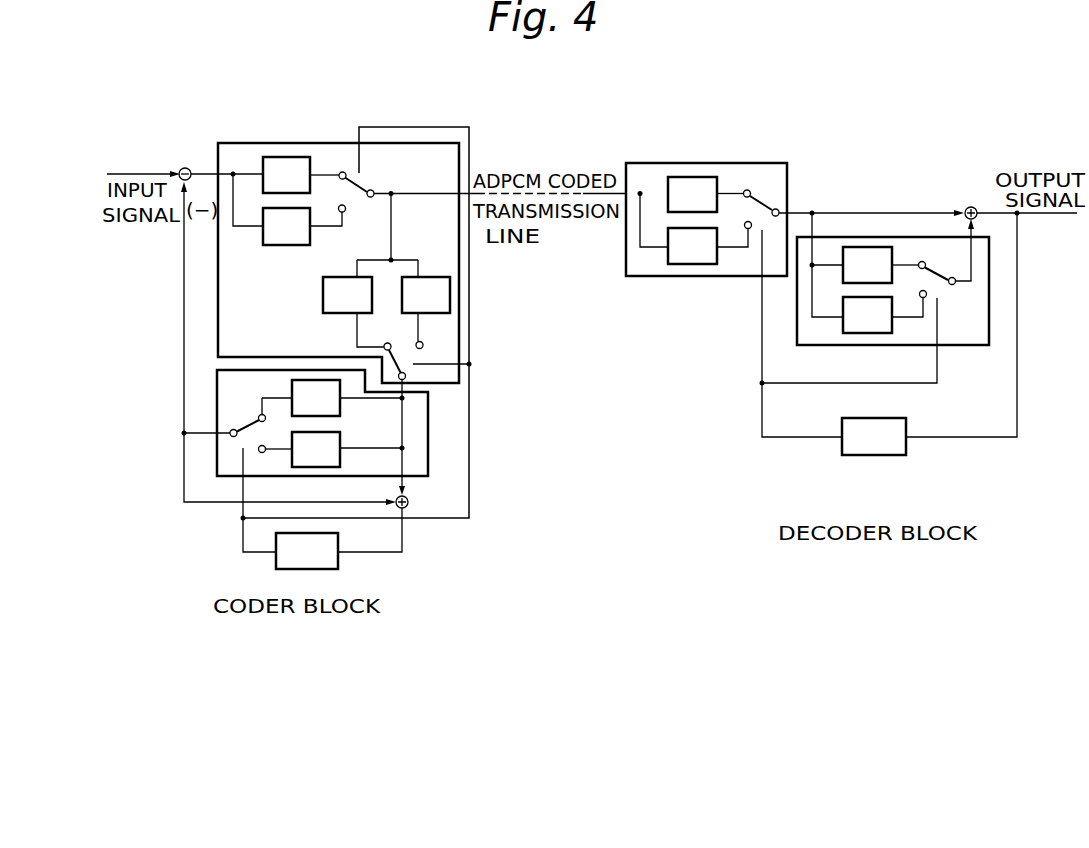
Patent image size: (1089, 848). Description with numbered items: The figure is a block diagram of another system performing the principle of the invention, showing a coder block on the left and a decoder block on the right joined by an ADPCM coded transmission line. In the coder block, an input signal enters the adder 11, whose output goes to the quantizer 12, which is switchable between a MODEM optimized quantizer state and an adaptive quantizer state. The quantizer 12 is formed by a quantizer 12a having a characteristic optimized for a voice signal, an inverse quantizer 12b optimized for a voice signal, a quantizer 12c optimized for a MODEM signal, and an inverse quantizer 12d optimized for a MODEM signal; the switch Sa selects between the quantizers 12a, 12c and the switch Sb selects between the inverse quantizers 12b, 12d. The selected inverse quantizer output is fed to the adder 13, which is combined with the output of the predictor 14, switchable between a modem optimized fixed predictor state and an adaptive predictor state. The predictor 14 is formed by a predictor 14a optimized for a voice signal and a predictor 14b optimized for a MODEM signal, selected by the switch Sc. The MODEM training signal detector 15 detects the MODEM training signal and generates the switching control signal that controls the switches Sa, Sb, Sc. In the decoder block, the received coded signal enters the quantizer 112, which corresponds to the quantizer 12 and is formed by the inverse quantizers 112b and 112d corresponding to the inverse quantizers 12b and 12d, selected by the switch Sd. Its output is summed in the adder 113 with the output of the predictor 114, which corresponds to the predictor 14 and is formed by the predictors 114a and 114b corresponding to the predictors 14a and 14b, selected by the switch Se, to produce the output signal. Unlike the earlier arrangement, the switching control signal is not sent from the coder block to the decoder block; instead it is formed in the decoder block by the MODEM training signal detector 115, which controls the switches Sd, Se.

The adder 11 is at (184, 168).
The quantizer 12 is at (279, 142).
The quantizer 12a is at (310, 160).
The inverse quantizer 12b is at (323, 300).
The quantizer 12c is at (288, 246).
The inverse quantizer 12d is at (437, 276).
The adder 13 is at (408, 503).
The predictor 14 is at (428, 441).
The predictor 14a is at (292, 388).
The predictor 14b is at (340, 437).
The MODEM training signal detector 15 is at (317, 570).
The quantizer 112 is at (675, 162).
The inverse quantizer 112b is at (718, 182).
The inverse quantizer 112d is at (723, 264).
The adder 113 is at (968, 207).
The predictor 114 is at (968, 346).
The predictor 114a is at (875, 247).
The predictor 114b is at (869, 333).
The MODEM training signal detector 115 is at (877, 456).
The switch Sa is at (343, 200).
The switch Sb is at (390, 346).
The switch Sc is at (237, 431).
The switch Sd is at (747, 218).
The switch Se is at (932, 290).